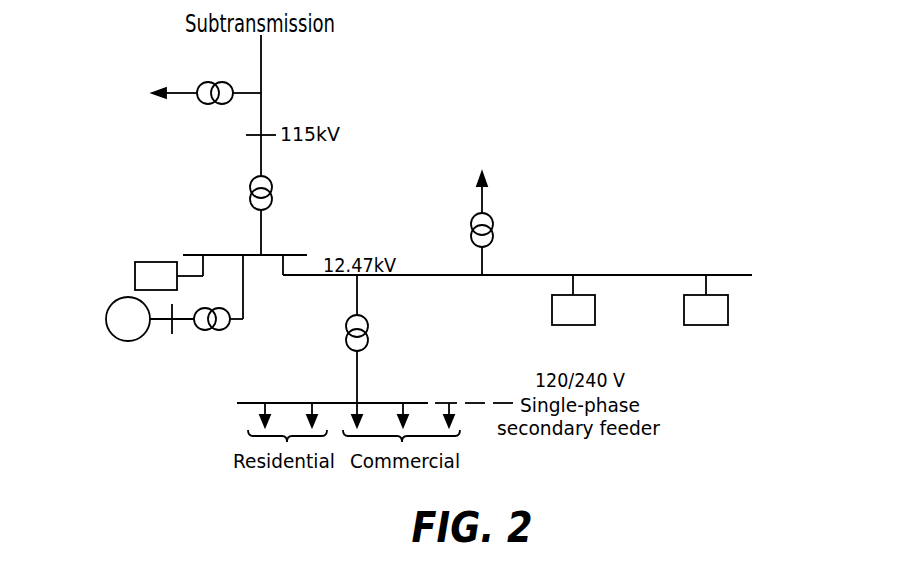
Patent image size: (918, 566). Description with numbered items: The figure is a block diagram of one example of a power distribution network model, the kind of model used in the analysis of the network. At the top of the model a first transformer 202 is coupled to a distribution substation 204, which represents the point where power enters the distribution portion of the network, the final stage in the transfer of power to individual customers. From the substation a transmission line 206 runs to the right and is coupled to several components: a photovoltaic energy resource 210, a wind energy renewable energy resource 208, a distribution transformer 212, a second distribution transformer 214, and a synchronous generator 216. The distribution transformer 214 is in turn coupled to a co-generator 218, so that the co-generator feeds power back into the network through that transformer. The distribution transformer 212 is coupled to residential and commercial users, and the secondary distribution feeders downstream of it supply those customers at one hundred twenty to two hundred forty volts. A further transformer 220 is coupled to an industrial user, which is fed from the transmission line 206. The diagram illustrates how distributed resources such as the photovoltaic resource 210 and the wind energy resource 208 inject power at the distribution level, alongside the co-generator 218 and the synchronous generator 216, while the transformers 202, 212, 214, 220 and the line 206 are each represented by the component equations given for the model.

The first transformer 202 is at (207, 104).
The distribution substation 204 is at (268, 209).
The transmission line 206 is at (535, 275).
The wind energy renewable energy resource 208 is at (716, 325).
The photovoltaic energy resource 210 is at (585, 325).
The distribution transformer 212 is at (354, 318).
The distribution transformer 214 is at (228, 327).
The synchronous generator 216 is at (143, 262).
The co-generator 218 is at (116, 299).
The transformer 220 is at (489, 212).